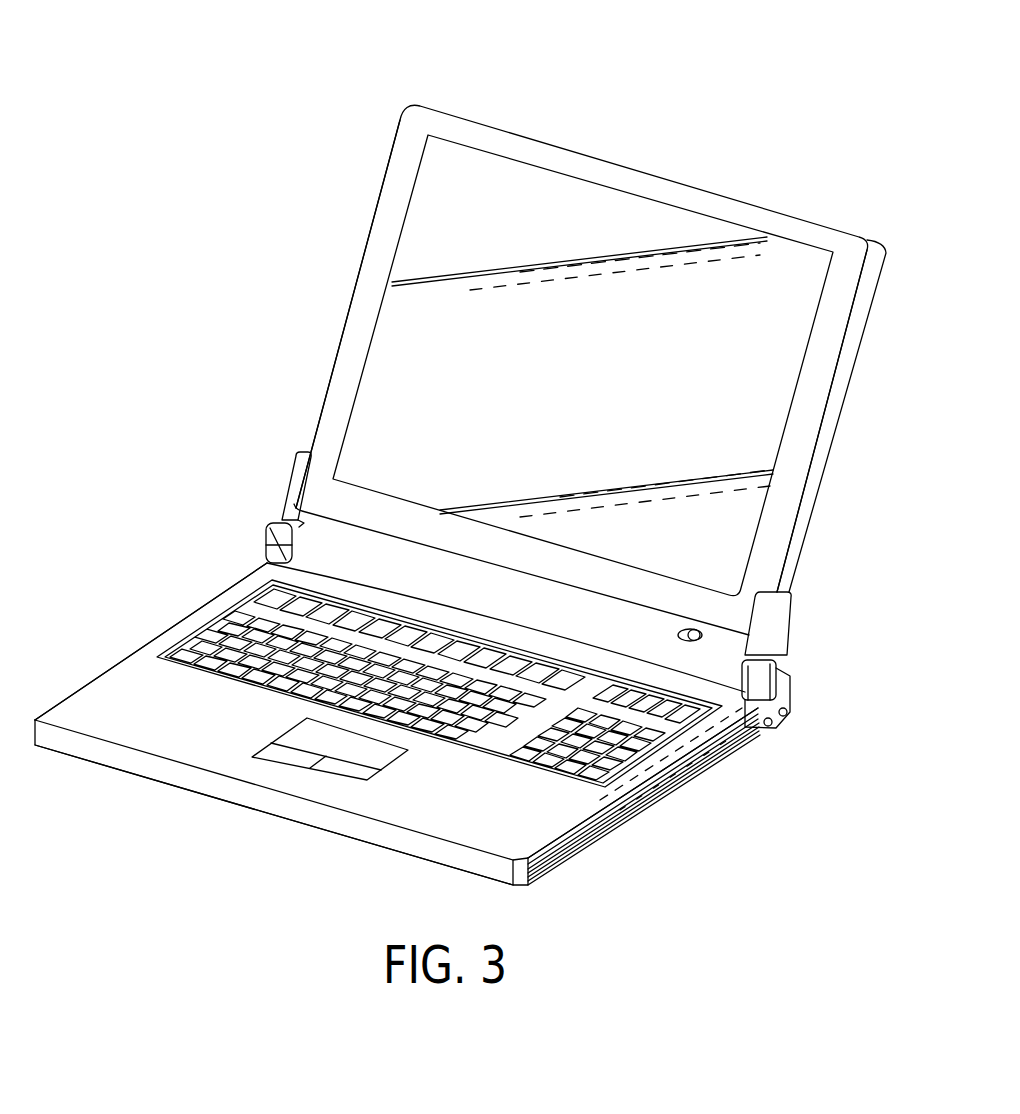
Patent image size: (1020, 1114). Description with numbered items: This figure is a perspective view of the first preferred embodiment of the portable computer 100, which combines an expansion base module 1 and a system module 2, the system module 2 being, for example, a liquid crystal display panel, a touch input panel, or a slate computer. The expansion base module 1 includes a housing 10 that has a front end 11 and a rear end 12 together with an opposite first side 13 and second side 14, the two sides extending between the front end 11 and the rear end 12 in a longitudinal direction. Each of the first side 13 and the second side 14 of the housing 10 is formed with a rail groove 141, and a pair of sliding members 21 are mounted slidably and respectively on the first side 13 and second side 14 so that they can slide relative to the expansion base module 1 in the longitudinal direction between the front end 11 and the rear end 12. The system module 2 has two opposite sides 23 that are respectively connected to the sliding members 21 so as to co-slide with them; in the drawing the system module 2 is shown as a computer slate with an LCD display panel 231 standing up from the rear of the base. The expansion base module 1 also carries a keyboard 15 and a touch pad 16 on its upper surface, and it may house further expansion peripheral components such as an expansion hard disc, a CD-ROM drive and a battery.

The notebook computer 100 is at (247, 43).
The expansion base module 1 is at (185, 800).
The housing 10 is at (500, 868).
The front end 11 is at (268, 800).
The rear end 12 is at (400, 602).
The first side 13 is at (163, 632).
The second side 14 is at (705, 757).
The rail groove 141 is at (575, 845).
The keyboard 15 is at (240, 607).
The touch pad 16 is at (273, 757).
The system module 2 is at (672, 168).
The sliding member 21 is at (280, 537).
The side 23 is at (350, 316).
The LCD display panel 231 is at (760, 437).